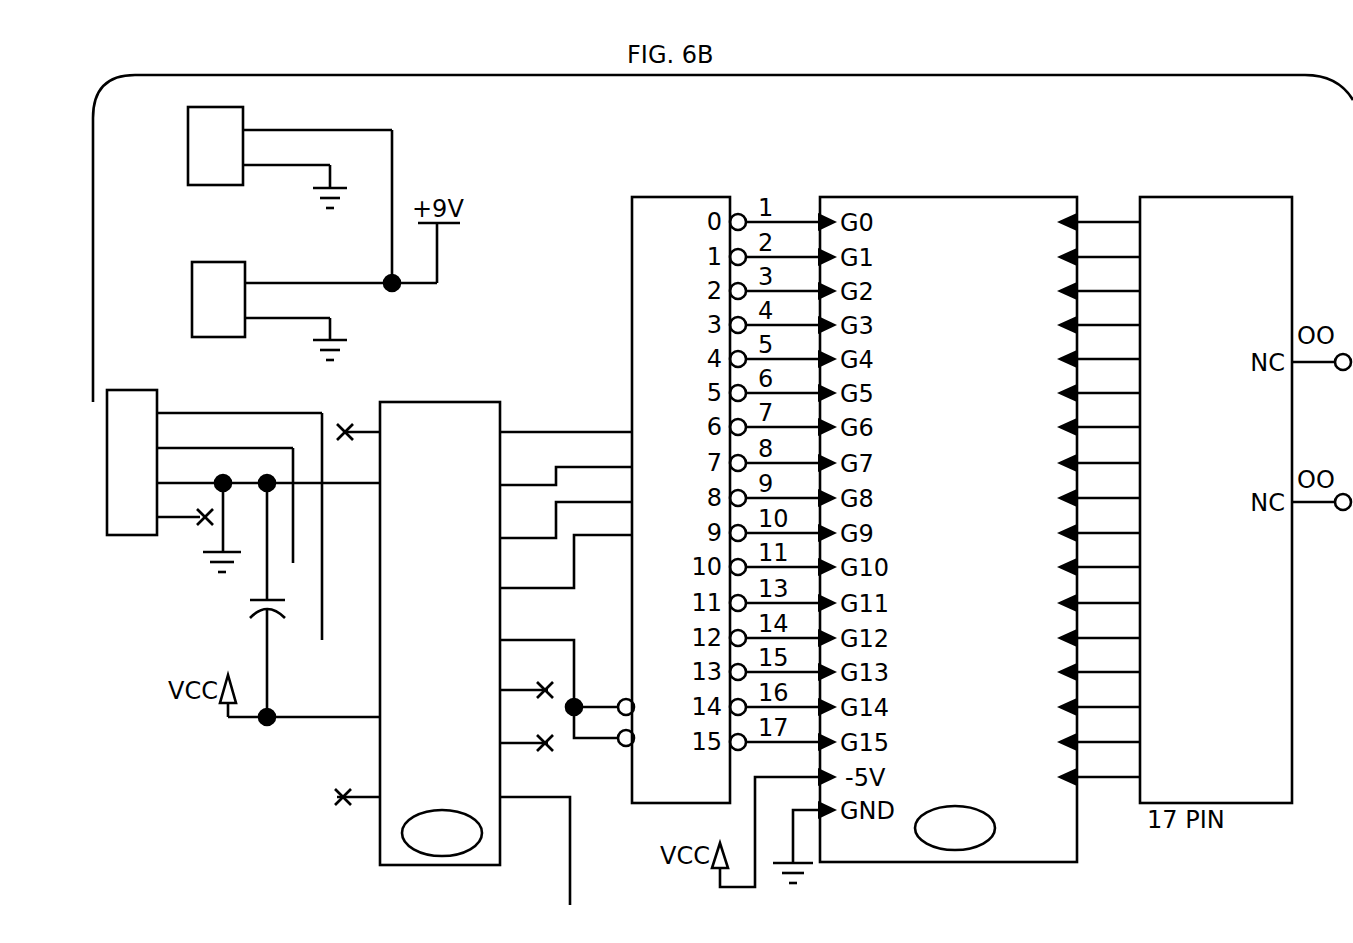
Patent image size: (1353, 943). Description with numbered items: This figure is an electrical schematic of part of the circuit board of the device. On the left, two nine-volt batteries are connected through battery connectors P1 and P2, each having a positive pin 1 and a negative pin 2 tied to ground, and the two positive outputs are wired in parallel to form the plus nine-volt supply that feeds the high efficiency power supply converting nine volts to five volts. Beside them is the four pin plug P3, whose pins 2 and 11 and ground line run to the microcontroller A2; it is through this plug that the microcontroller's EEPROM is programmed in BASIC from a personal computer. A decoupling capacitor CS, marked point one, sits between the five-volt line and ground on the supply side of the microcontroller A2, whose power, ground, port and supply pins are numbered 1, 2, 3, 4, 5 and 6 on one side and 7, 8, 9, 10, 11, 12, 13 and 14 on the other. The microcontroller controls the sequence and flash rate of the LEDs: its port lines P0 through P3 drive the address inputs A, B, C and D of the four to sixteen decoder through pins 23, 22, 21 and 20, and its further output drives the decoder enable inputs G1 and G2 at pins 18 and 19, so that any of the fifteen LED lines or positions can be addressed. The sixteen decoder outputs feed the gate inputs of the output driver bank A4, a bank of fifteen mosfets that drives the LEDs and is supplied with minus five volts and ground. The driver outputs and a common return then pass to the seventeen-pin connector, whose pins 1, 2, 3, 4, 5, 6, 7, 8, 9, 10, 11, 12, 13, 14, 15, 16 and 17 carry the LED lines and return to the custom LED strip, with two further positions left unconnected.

The connector pin 1 (LED 0) 1 is at (1100, 214).
The connector pin 2 (LED 1) 2 is at (1100, 249).
The connector pin 3 (LED 2) 3 is at (1100, 283).
The connector pin 4 (LED 3) 4 is at (1100, 317).
The connector pin 5 (LED 4) 5 is at (1100, 351).
The connector pin 6 (LED 5) 6 is at (1100, 385).
The connector pin 7 (LED 6) 7 is at (1100, 419).
The connector pin 8 (common return) 8 is at (1093, 455).
The connector pin 9 (LED 7) 9 is at (1100, 490).
The connector pin 10 (LED 8) 10 is at (1100, 525).
The connector pin 11 (LED 9) 11 is at (1100, 559).
The connector pin 12 (LED 10) 12 is at (1100, 595).
The connector pin 13 (LED 11) 13 is at (1100, 630).
The connector pin 14 (LED 12) 14 is at (1100, 664).
The connector pin 15 (LED 13) 15 is at (1100, 699).
The connector pin 16 (LED 14) 16 is at (1100, 734).
The connector pin 17 (LED 15) 17 is at (1100, 769).
The decoder enable input G1 18 is at (620, 699).
The decoder enable input G2 19 is at (630, 731).
The decoder address input D 20 is at (579, 547).
The decoder address input C 21 is at (578, 505).
The decoder address input B 22 is at (578, 460).
The decoder address input A 23 is at (578, 424).
The battery connector P1 is at (290, 148).
The battery connector P2 is at (291, 302).
The four pin plug P3 is at (214, 499).
The microcontroller A2 is at (437, 633).
The bank of mosfets A4 is at (948, 529).
The capacitor CS 0.1 CS is at (255, 600).